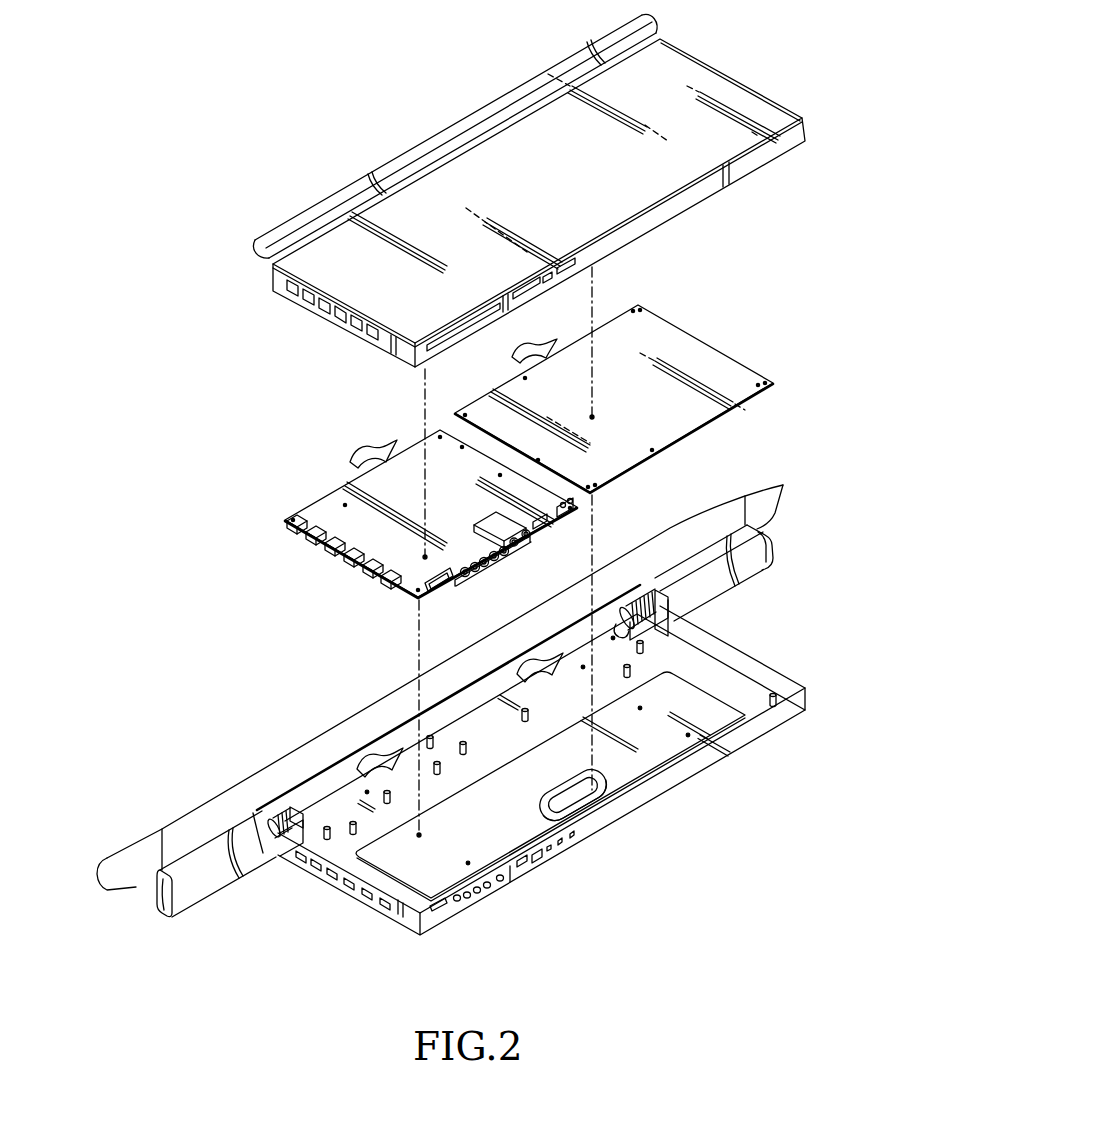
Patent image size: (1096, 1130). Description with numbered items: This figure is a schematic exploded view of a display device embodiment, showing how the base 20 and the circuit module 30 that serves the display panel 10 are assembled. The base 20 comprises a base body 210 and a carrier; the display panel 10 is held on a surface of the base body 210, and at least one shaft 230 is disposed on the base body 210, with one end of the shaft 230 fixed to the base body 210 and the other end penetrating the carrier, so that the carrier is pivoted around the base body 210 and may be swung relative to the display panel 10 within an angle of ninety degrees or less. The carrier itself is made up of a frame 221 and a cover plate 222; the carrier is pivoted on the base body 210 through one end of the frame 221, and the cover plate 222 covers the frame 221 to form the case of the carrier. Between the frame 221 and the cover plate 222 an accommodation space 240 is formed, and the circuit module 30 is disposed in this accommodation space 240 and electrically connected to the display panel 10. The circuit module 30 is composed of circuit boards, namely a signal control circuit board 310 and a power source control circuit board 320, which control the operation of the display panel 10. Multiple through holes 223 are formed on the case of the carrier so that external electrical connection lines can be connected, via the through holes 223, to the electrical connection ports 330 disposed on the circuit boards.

The display panel 10 is at (107, 877).
The base 20 is at (435, 776).
The circuit module 30 is at (540, 447).
The base body 210 is at (215, 878).
The frame 221 is at (761, 673).
The cover plate 222 is at (734, 90).
The through holes 223 is at (326, 306).
The shaft 230 is at (674, 617).
The accommodation space 240 is at (723, 717).
The signal control circuit board 310 is at (431, 523).
The power source control circuit board 320 is at (755, 373).
The electrical connection ports 330 is at (390, 573).